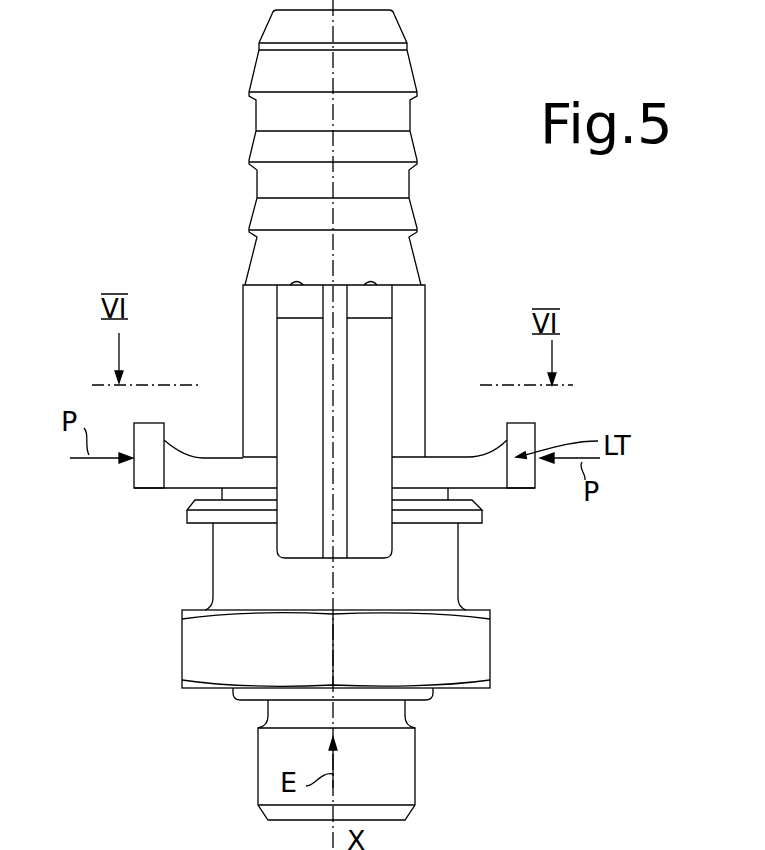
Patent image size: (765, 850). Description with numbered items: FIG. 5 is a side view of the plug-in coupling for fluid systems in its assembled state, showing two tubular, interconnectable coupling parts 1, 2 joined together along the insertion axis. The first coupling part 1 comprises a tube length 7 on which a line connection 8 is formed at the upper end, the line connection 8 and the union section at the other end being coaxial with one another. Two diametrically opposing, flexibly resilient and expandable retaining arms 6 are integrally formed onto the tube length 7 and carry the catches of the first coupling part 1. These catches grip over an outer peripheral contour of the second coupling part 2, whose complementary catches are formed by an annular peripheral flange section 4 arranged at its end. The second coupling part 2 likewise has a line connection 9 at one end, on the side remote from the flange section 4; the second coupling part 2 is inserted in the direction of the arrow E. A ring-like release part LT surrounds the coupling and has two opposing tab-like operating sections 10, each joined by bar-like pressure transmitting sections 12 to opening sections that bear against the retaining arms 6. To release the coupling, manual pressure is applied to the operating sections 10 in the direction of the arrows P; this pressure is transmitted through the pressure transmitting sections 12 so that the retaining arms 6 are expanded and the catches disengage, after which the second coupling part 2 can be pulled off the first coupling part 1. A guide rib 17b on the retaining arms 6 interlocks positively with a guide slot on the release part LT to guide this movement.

The first coupling part 1 is at (228, 204).
The second coupling part 2 is at (231, 777).
The flange section 4 is at (465, 524).
The retaining arms 6 is at (375, 377).
The tube length 7 is at (410, 326).
The line connection 8 is at (398, 150).
The line connection 9 is at (402, 775).
The operating sections 10 is at (520, 438).
The pressure transmitting sections 12 is at (180, 478).
The guide rib 17b is at (342, 438).